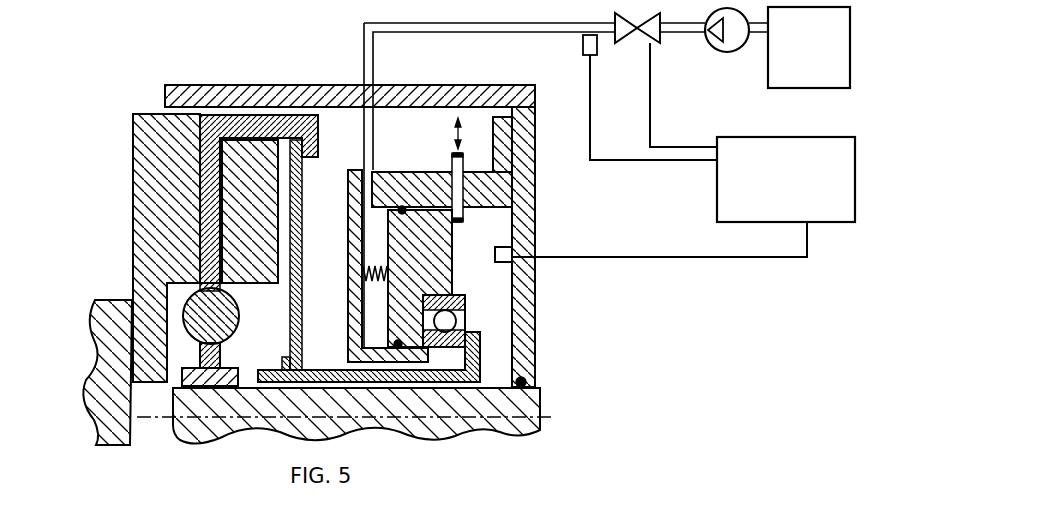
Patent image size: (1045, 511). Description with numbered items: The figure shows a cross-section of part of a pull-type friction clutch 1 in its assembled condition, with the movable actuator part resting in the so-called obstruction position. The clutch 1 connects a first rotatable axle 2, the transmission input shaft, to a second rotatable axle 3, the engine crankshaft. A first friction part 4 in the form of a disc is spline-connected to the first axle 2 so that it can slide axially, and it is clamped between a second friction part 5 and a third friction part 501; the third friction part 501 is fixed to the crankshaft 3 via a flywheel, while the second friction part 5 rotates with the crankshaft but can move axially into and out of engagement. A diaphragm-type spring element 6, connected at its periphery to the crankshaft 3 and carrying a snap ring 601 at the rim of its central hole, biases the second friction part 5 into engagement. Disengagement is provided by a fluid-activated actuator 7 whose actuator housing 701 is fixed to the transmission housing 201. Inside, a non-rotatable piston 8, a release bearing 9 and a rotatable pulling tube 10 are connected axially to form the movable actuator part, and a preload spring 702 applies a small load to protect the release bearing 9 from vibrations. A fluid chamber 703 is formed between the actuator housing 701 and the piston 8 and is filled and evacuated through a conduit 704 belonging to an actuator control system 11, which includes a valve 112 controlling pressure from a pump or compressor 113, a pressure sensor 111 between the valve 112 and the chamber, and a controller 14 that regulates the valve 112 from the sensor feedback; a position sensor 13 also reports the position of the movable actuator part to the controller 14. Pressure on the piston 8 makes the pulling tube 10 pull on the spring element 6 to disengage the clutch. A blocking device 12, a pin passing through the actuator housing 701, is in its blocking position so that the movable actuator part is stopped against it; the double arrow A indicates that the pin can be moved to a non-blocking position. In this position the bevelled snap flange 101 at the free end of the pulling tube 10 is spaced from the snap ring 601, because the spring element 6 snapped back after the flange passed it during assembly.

The clutch 1 is at (105, 81).
The transmission housing 201 is at (163, 86).
The third friction part 501 is at (160, 142).
The second friction part 5 is at (247, 178).
The spring element 6 is at (290, 200).
The first friction part 4 is at (213, 235).
The second rotatable axle 3 is at (107, 352).
The snap ring 601 is at (280, 360).
The fluid chamber 703 is at (348, 237).
The first rotatable axle 2 is at (203, 403).
The snap flange 101 is at (264, 368).
The actuator 7 is at (357, 140).
The conduit 704 is at (373, 133).
The double arrow A is at (462, 137).
The pressure sensor 111 is at (582, 45).
The valve 112 is at (620, 44).
The compressor 113 is at (723, 53).
The actuator control system 11 is at (690, 85).
The controller 14 is at (803, 197).
The blocking device 12 is at (458, 188).
The actuator housing 701 is at (487, 192).
The piston 8 is at (417, 246).
The position sensor 13 is at (500, 266).
The preload spring 702 is at (388, 273).
The release bearing 9 is at (467, 300).
The pulling tube 10 is at (480, 352).